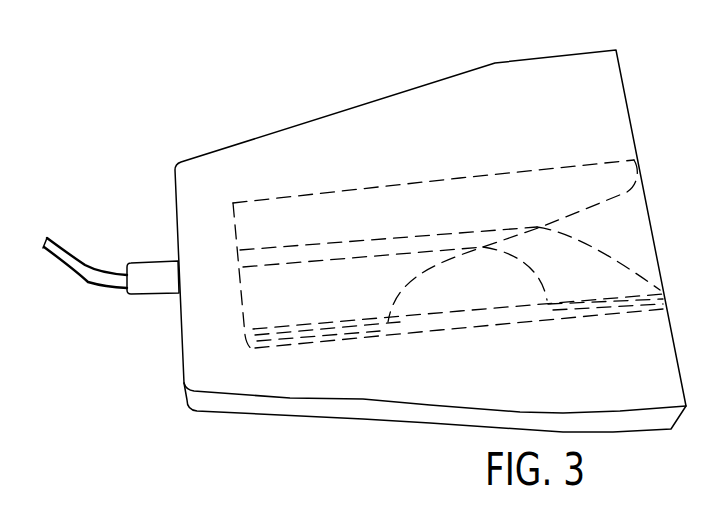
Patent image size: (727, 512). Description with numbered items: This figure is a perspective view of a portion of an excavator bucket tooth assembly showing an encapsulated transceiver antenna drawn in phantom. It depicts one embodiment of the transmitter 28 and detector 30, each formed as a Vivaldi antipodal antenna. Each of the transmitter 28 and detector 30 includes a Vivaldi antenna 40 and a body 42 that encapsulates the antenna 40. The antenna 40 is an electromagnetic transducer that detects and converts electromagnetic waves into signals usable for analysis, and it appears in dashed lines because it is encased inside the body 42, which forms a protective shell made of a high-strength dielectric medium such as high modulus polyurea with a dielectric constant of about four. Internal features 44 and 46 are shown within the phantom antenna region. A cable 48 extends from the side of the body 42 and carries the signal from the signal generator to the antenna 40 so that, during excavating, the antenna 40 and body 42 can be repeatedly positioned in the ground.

The transmitter 28 is at (250, 83).
The detector 30 is at (215, 63).
The Vivaldi antenna 40 is at (502, 161).
The body 42 is at (388, 123).
The support ledges 44 is at (332, 297).
The curved guide 46 is at (598, 277).
The cable 48 is at (69, 259).